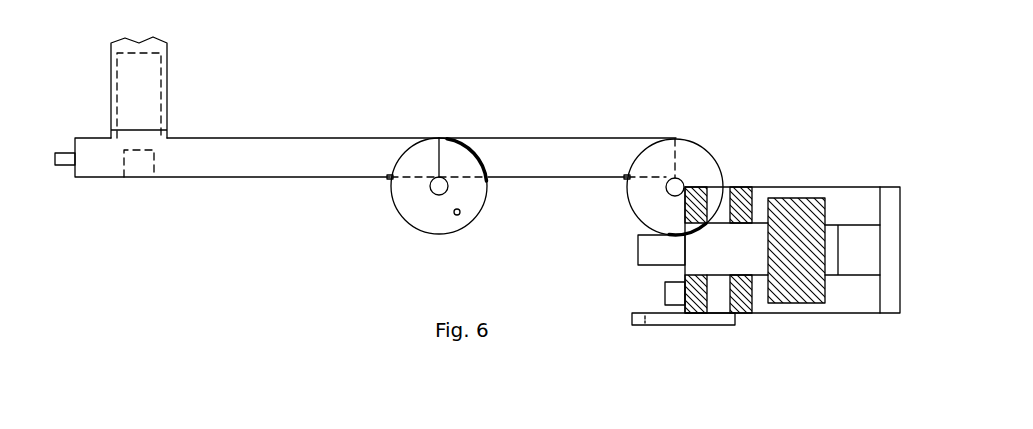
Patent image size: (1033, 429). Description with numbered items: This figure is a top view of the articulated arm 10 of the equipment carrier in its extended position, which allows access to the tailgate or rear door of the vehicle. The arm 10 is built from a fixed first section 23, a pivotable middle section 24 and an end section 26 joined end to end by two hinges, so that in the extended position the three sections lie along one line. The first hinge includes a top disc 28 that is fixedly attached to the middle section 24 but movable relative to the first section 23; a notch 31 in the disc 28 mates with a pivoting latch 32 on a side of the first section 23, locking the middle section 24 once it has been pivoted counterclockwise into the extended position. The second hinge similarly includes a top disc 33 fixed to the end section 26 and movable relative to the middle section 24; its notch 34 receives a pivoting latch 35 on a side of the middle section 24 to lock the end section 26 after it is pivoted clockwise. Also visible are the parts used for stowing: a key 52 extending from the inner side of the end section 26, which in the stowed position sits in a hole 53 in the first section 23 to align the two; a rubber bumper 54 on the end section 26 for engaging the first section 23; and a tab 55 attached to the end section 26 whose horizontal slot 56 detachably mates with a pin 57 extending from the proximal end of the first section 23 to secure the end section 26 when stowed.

The arm 10 is at (277, 136).
The first section 23 is at (318, 135).
The middle section 24 is at (537, 137).
The end section 26 is at (745, 258).
The top disc 28 is at (441, 235).
The notch 31 is at (394, 179).
The pivoting latch 32 is at (389, 179).
The top disc 33 is at (713, 160).
The notch 34 is at (632, 179).
The pivoting latch 35 is at (626, 179).
The key 52 is at (638, 248).
The hole 53 is at (151, 166).
The rubber bumper 54 is at (665, 293).
The tab 55 is at (718, 326).
The horizontal slot 56 is at (652, 320).
The pin 57 is at (73, 154).